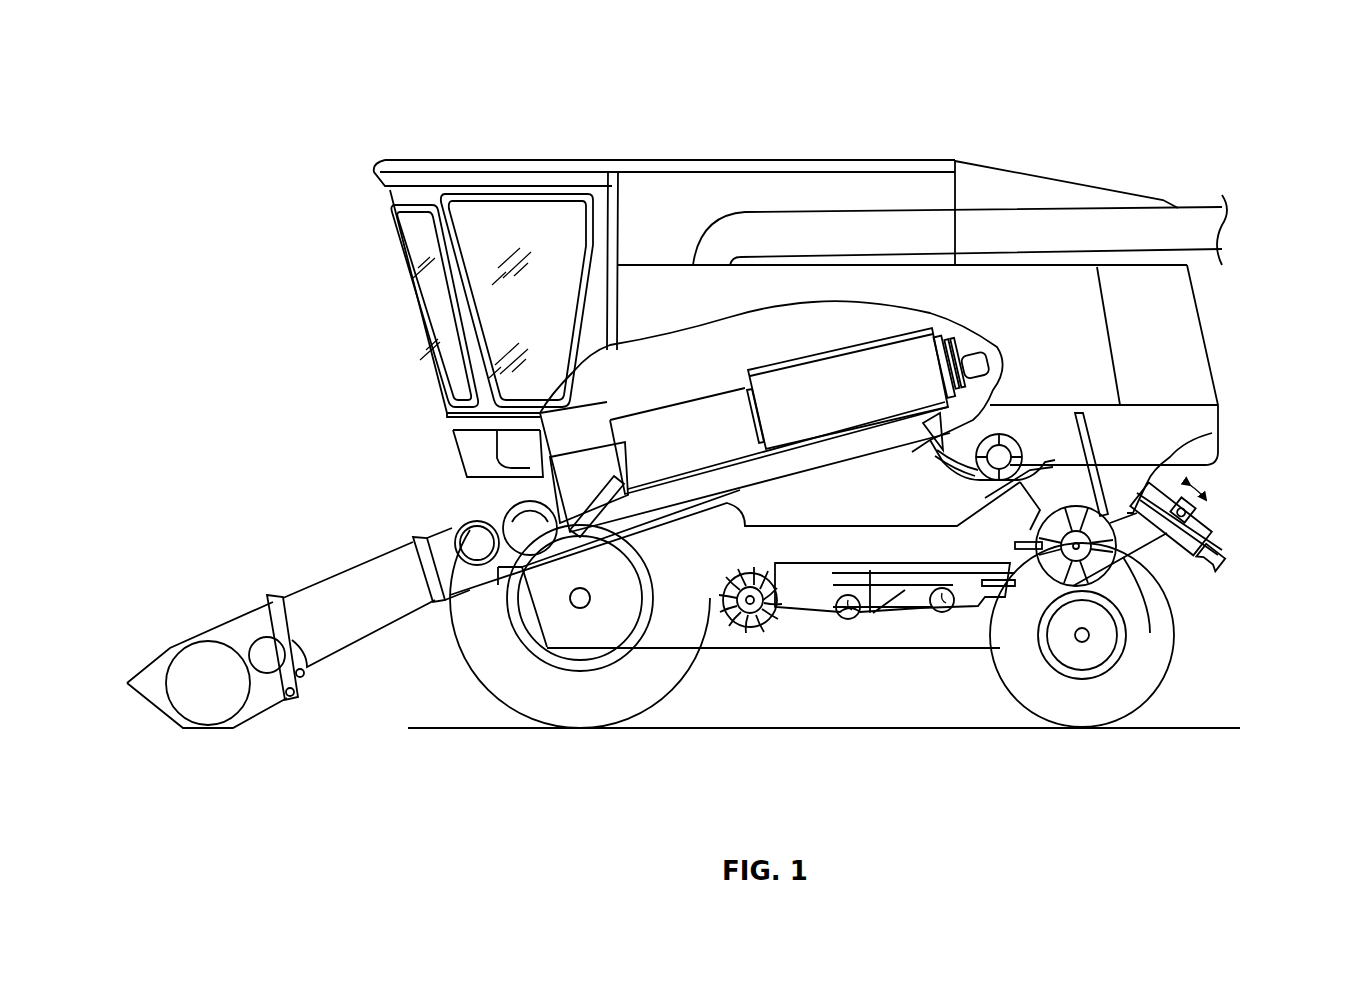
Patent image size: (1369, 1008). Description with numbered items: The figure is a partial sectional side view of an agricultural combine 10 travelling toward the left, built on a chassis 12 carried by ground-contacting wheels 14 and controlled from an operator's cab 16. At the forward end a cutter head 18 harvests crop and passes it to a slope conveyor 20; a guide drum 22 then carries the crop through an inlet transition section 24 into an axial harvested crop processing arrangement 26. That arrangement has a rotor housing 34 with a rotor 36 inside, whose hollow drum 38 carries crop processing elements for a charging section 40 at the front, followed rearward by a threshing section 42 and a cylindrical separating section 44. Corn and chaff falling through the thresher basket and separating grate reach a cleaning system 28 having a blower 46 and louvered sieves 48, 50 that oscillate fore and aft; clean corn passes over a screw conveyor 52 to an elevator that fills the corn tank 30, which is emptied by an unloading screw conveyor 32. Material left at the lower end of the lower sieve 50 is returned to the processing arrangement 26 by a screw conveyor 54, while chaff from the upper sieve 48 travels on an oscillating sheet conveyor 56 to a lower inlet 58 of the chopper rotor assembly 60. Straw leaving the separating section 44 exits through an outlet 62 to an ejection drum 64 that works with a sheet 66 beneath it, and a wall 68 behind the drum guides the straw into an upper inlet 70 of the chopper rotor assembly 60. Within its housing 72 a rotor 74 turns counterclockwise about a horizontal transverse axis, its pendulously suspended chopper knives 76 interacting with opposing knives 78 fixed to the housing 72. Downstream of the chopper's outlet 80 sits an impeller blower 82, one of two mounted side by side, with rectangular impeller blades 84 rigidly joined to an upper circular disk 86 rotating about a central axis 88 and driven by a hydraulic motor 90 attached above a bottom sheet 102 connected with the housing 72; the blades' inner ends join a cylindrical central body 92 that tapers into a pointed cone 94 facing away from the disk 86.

The agricultural combine 10 is at (1030, 72).
The chassis 12 is at (803, 549).
The wheels 14 is at (662, 685).
The operator's cab 16 is at (495, 218).
The cutter head 18 is at (250, 622).
The slope conveyor 20 is at (330, 590).
The guide drum 22 is at (470, 520).
The inlet transition section 24 is at (585, 498).
The axial harvested crop processing arrangement 26 is at (850, 488).
The cleaning system 28 is at (892, 612).
The corn tank 30 is at (648, 218).
The unloading screw conveyor 32 is at (960, 230).
The rotor housing 34 is at (712, 508).
The rotor 36 is at (652, 508).
The hollow drum 38 is at (907, 363).
The charging section 40 is at (603, 407).
The threshing section 42 is at (607, 402).
The separating section 44 is at (750, 370).
The blower 46 is at (768, 618).
The upper sieve 48 is at (870, 578).
The lower sieve 50 is at (907, 590).
The screw conveyor 52 is at (840, 618).
The screw conveyor 54 is at (935, 612).
The oscillating sheet conveyor 56 is at (998, 665).
The lower inlet 58 is at (1073, 590).
The chopper rotor assembly 60 is at (1140, 590).
The outlet 62 is at (977, 503).
The ejection drum 64 is at (998, 442).
The sheet 66 is at (977, 480).
The wall 68 is at (1087, 450).
The upper inlet 70 is at (1068, 413).
The housing 72 is at (1125, 557).
The rotor 74 is at (1075, 508).
The chopper knives 76 is at (1048, 517).
The opposing knives 78 is at (1013, 537).
The outlet 80 is at (1172, 543).
The impeller blower 82 is at (1258, 488).
The impeller blades 84 is at (1226, 562).
The upper circular disk 86 is at (1188, 486).
The central axis 88 is at (1203, 500).
The hydraulic motor 90 is at (1195, 518).
The cylindrical central body 92 is at (1157, 543).
The cone 94 is at (1172, 547).
The bottom sheet 102 is at (1212, 437).